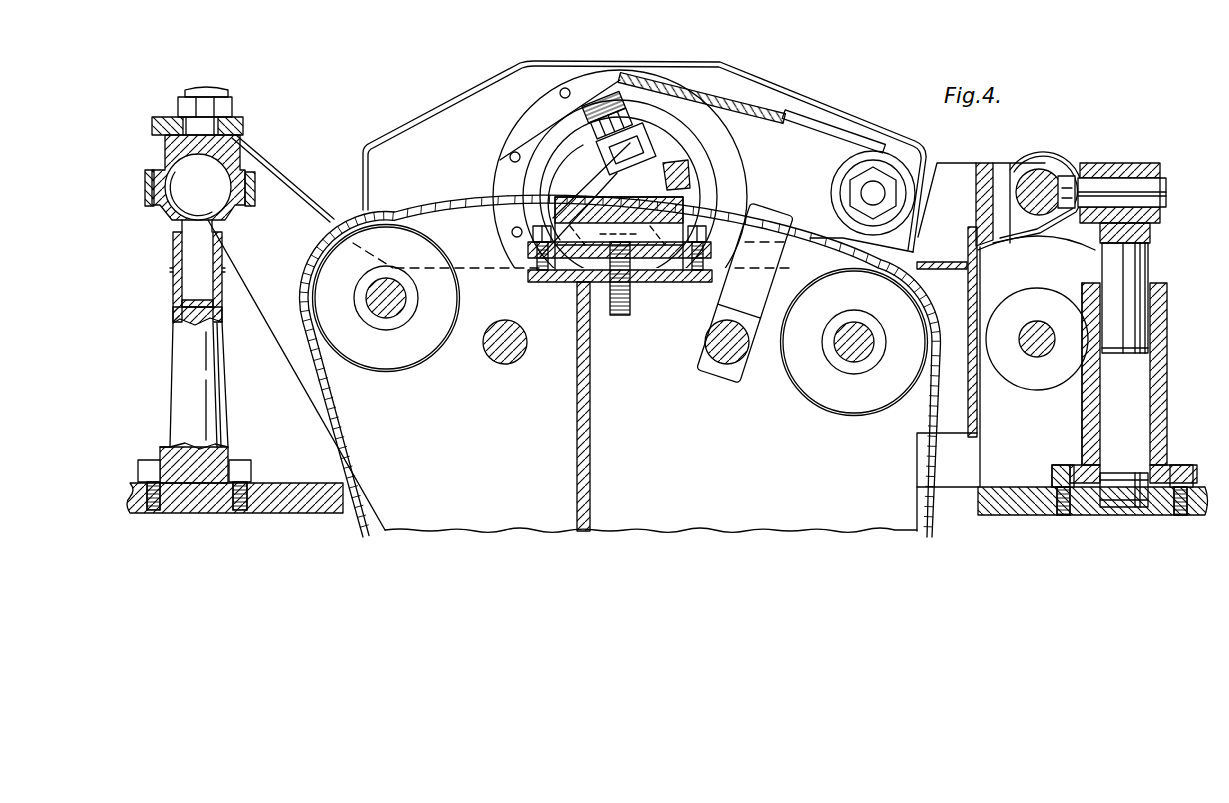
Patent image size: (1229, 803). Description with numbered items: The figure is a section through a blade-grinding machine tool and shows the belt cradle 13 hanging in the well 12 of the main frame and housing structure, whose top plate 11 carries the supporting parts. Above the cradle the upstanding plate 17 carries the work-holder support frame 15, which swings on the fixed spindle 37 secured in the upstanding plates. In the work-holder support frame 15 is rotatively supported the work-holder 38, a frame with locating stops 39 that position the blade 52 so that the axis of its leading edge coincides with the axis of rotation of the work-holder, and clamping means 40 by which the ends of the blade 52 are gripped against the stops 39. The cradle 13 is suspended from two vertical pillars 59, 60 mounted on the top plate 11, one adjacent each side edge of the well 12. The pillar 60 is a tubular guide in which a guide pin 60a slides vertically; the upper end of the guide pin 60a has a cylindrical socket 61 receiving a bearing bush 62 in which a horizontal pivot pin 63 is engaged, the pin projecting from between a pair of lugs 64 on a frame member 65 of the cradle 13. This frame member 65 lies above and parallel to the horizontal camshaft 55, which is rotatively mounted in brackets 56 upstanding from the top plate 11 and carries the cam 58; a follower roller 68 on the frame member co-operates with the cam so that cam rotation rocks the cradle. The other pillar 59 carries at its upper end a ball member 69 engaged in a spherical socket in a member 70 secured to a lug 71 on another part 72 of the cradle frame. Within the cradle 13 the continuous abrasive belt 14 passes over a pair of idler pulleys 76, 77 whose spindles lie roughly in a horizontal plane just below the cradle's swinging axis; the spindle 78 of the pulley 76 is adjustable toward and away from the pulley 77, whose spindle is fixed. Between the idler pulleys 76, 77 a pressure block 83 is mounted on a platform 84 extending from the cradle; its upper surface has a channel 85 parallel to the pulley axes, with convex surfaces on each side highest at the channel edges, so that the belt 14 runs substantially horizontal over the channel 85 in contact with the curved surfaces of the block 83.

The top plate 11 is at (131, 514).
The well 12 is at (951, 506).
The cradle 13 is at (670, 497).
The abrasive belt 14 is at (352, 528).
The work-holder support frame 15 is at (760, 122).
The upstanding plate 17 is at (828, 112).
The fixed spindle 37 is at (866, 190).
The work-holder 38 is at (508, 150).
The locating stops 39 is at (646, 278).
The clamping means 40 is at (630, 152).
The blade 52 is at (668, 180).
The camshaft 55 is at (1034, 358).
The brackets 56 is at (1032, 460).
The cam 58 is at (1057, 274).
The pillar 59 is at (225, 372).
The pillar 60 is at (1084, 434).
The guide pin 60a is at (1140, 250).
The cylindrical socket 61 is at (1105, 165).
The bearing bush 62 is at (1138, 165).
The pivot pin 63 is at (1158, 186).
The lugs 64 is at (1046, 188).
The frame member 65 is at (985, 170).
The follower roller 68 is at (1032, 160).
The ball member 69 is at (212, 222).
The socket member 70 is at (248, 147).
The lug 71 is at (231, 118).
The frame part 72 is at (243, 151).
The idler pulley 76 is at (407, 383).
The idler pulley 77 is at (803, 400).
The spindle 78 is at (385, 312).
The pressure block 83 is at (505, 228).
The platform 84 is at (638, 287).
The channel 85 is at (583, 242).